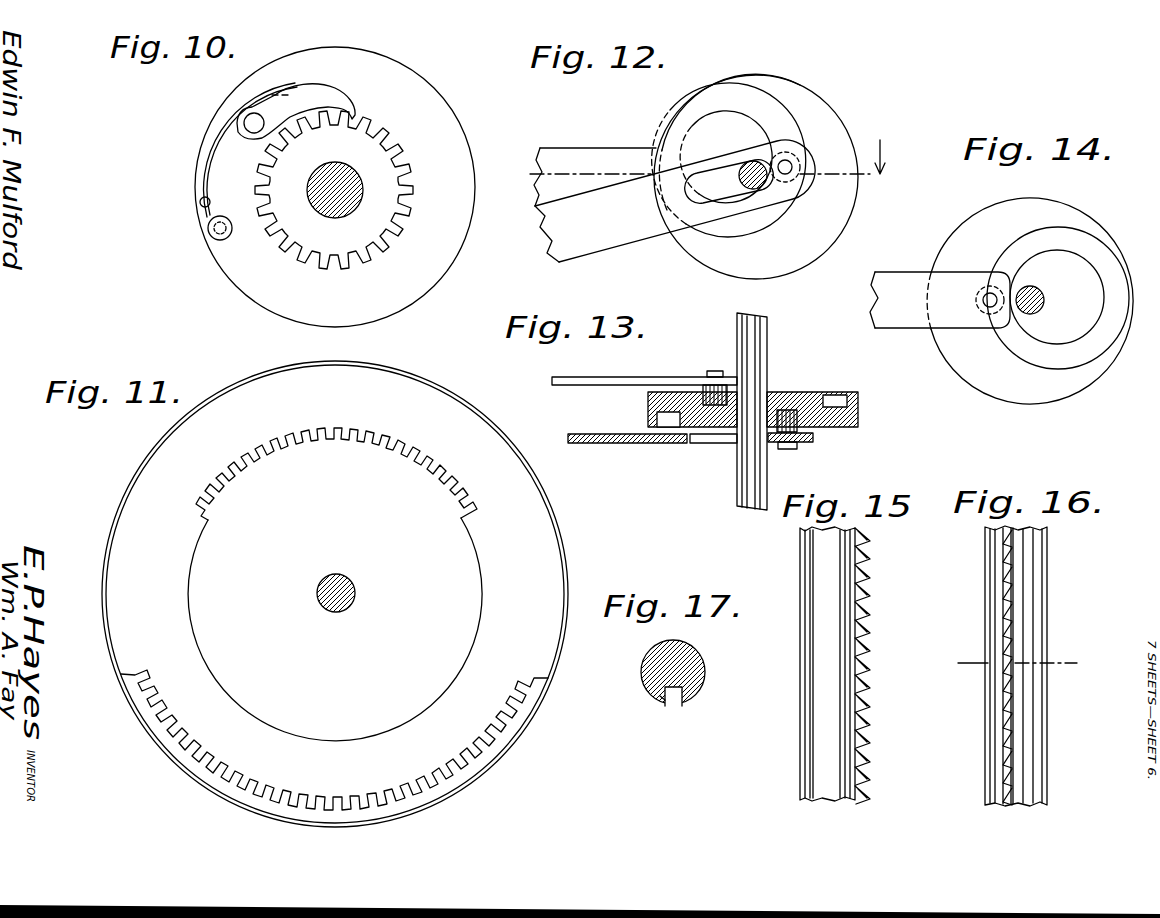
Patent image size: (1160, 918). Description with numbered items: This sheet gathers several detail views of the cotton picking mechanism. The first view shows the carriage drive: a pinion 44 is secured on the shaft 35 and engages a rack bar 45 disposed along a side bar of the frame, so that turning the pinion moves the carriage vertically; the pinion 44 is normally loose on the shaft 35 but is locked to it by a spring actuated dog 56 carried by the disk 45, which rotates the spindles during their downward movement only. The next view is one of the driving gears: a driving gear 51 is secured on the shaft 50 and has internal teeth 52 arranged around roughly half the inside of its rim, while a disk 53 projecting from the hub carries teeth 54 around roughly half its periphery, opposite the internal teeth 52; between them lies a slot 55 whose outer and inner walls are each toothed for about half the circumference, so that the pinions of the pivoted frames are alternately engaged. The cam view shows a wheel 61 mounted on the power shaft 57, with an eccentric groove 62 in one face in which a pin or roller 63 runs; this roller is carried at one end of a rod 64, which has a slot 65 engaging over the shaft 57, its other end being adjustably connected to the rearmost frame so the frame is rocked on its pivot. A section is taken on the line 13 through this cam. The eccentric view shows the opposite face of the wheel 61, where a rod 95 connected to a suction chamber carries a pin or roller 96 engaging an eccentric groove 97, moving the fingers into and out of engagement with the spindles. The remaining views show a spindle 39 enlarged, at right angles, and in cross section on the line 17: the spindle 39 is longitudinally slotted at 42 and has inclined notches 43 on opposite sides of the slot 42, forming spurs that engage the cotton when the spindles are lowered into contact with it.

In FIG. 10, the shaft 35 is at (345, 186).
In FIG. 10, the pinion 44 is at (395, 146).
In FIG. 10, the rack bar 45 is at (397, 83).
In FIG. 10, the spring actuated dog 56 is at (312, 87).
In FIG. 11, the shaft 50 is at (343, 579).
In FIG. 11, the driving gear 51 is at (263, 377).
In FIG. 11, the internal teeth 52 is at (323, 801).
In FIG. 11, the disk 53 is at (473, 602).
In FIG. 11, the teeth 54 is at (328, 428).
In FIG. 11, the slot 55 is at (335, 594).
In FIG. 12, the section line 13 is at (708, 163).
In FIG. 12, the shaft 57 is at (760, 190).
In FIG. 13, the shaft 57 is at (767, 362).
In FIG. 12, the wheel 61 is at (832, 122).
In FIG. 13, the wheel 61 is at (858, 417).
In FIG. 14, the wheel 61 is at (1037, 208).
In FIG. 12, the eccentric groove 62 is at (688, 115).
In FIG. 13, the eccentric groove 62 is at (660, 418).
In FIG. 12, the pin or roller 63 is at (786, 155).
In FIG. 13, the pin or roller 63 is at (807, 433).
In FIG. 12, the rod 64 is at (675, 201).
In FIG. 13, the rod 64 is at (628, 444).
In FIG. 12, the slot 65 is at (718, 177).
In FIG. 13, the slot 65 is at (708, 437).
In FIG. 12, the rod 95 is at (590, 155).
In FIG. 13, the rod 95 is at (592, 378).
In FIG. 14, the rod 95 is at (897, 272).
In FIG. 13, the pin or roller 96 is at (708, 388).
In FIG. 14, the pin or roller 96 is at (990, 314).
In FIG. 13, the eccentric groove 97 is at (833, 397).
In FIG. 14, the eccentric groove 97 is at (1080, 240).
In FIG. 15, the spindle 39 is at (843, 565).
In FIG. 16, the spindle 39 is at (1037, 620).
In FIG. 17, the spindle 39 is at (697, 657).
In FIG. 16, the slot 42 is at (1017, 695).
In FIG. 17, the slot 42 is at (702, 693).
In FIG. 15, the inclined notches 43 is at (867, 655).
In FIG. 16, the inclined notches 43 is at (1007, 600).
In FIG. 17, the inclined notches 43 is at (693, 709).
In FIG. 16, the section line 17 is at (1019, 663).